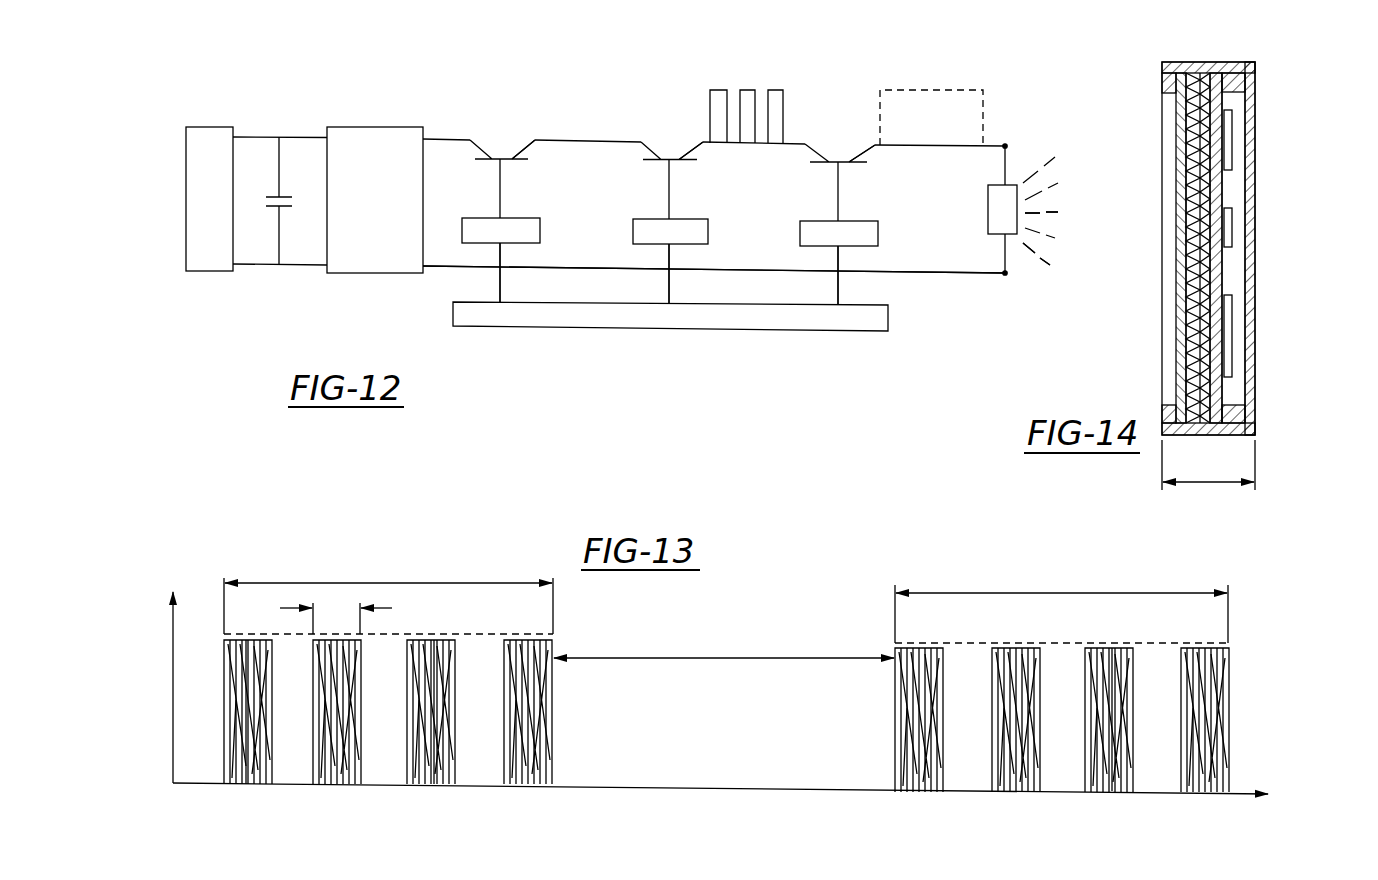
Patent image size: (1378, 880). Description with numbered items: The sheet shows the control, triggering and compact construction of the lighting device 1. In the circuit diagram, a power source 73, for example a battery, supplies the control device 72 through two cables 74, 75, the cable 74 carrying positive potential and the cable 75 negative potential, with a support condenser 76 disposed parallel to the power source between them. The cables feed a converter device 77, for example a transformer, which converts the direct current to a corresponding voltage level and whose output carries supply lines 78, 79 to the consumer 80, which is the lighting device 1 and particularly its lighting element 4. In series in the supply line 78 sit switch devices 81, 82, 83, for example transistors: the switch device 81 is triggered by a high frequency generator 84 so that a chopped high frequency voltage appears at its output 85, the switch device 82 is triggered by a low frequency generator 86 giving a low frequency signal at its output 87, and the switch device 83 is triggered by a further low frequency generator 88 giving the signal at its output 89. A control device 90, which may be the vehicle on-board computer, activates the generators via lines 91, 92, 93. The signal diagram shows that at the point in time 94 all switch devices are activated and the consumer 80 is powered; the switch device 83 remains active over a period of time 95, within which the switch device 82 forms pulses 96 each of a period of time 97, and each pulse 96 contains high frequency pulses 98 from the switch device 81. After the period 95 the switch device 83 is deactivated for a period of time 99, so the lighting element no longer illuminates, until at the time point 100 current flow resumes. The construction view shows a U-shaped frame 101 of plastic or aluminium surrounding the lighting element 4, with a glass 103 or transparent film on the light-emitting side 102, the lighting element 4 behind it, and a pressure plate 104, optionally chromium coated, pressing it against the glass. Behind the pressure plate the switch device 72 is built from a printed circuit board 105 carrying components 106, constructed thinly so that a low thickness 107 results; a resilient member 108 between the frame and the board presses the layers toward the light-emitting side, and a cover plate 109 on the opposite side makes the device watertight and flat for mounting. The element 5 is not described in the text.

In FIG. 12, the lighting device 1 is at (1068, 178).
In FIG. 12, the lighting element 4 is at (1015, 218).
In FIG. 14, the lighting element 4 is at (1196, 185).
In FIG. 14, the layer 5 is at (1182, 130).
In FIG. 12, the control device 72 is at (1028, 145).
In FIG. 14, the control device 72 is at (1240, 248).
In FIG. 12, the power source 73 is at (188, 158).
In FIG. 12, the cable 74 is at (250, 133).
In FIG. 12, the cable 75 is at (262, 268).
In FIG. 12, the support condenser 76 is at (292, 188).
In FIG. 12, the converter device 77 is at (370, 137).
In FIG. 12, the supply line 78 is at (600, 140).
In FIG. 12, the supply line 79 is at (620, 270).
In FIG. 12, the consumer 80 is at (1018, 250).
In FIG. 12, the switch device 81 is at (498, 150).
In FIG. 12, the switch device 82 is at (668, 152).
In FIG. 12, the switch device 83 is at (833, 150).
In FIG. 12, the high frequency generator 84 is at (475, 222).
In FIG. 12, the output 85 is at (527, 145).
In FIG. 12, the low frequency generator 86 is at (708, 235).
In FIG. 12, the output 87 is at (712, 153).
In FIG. 12, the low frequency generator 88 is at (878, 232).
In FIG. 12, the output 89 is at (878, 166).
In FIG. 12, the control device 90 is at (557, 318).
In FIG. 12, the line 91 is at (500, 283).
In FIG. 12, the line 92 is at (672, 285).
In FIG. 12, the line 93 is at (840, 300).
In FIG. 13, the point in time 94 is at (225, 725).
In FIG. 13, the period of time 95 is at (445, 583).
In FIG. 13, the pulse 96 is at (272, 712).
In FIG. 13, the period of time 97 is at (283, 605).
In FIG. 13, the high frequency pulse 98 is at (250, 760).
In FIG. 13, the period of time 99 is at (758, 655).
In FIG. 13, the time point 100 is at (895, 750).
In FIG. 14, the frame 101 is at (1200, 68).
In FIG. 14, the light-emitting side 102 is at (1152, 275).
In FIG. 14, the glass 103 is at (1185, 325).
In FIG. 14, the pressure plate 104 is at (1205, 195).
In FIG. 14, the printed circuit board 105 is at (1215, 270).
In FIG. 14, the component 106 is at (1228, 140).
In FIG. 14, the thickness 107 is at (1230, 486).
In FIG. 14, the resilient member 108 is at (1232, 85).
In FIG. 14, the cover plate 109 is at (1230, 310).